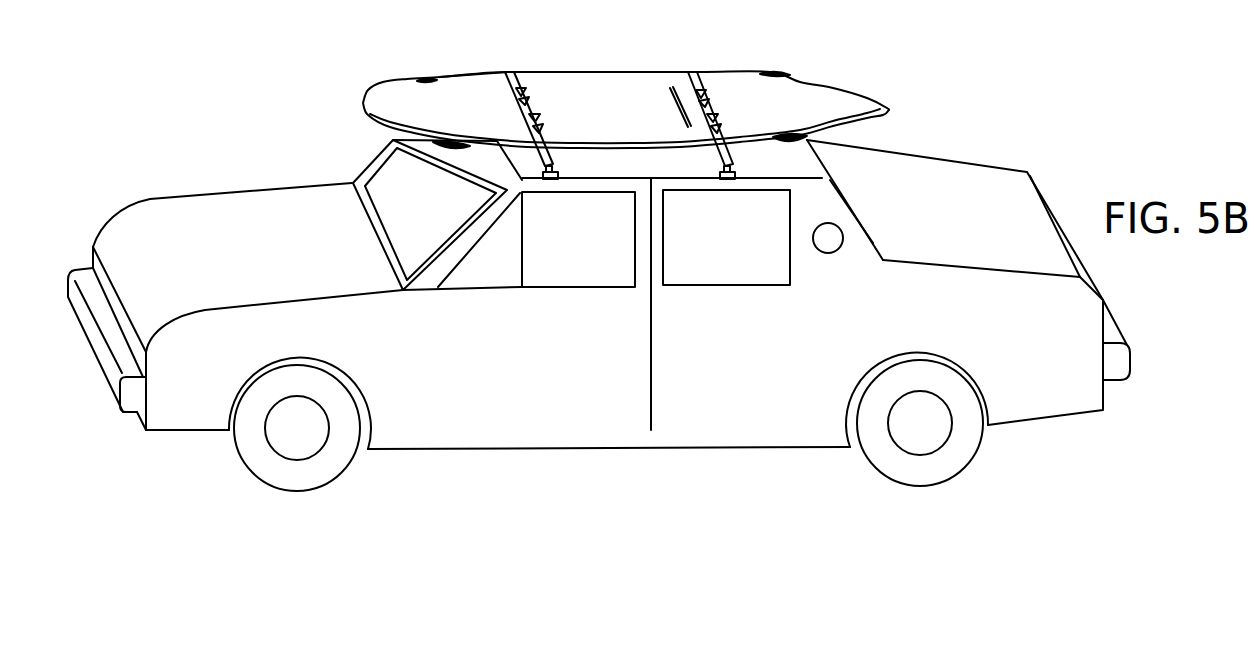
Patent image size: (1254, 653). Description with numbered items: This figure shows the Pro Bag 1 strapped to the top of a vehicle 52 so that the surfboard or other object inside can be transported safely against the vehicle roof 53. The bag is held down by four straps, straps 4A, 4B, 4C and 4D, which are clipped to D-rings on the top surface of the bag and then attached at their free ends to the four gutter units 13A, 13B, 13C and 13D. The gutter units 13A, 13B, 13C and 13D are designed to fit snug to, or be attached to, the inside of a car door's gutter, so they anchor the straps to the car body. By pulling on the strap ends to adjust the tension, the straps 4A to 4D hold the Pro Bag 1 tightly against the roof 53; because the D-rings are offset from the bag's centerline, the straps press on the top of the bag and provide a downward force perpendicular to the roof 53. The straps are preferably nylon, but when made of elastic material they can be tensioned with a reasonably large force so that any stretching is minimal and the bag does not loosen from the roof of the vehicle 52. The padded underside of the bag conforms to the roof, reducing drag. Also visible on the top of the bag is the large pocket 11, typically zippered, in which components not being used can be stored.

The Pro Bag 1 is at (383, 100).
The vehicle roof 53 is at (473, 73).
The large pocket 11 is at (668, 90).
The gutter unit 13C is at (505, 72).
The gutter unit 13D is at (689, 72).
The strap 4C is at (517, 72).
The strap 4D is at (700, 72).
The strap 4B is at (552, 140).
The strap 4A is at (733, 157).
The gutter unit 13B is at (551, 182).
The gutter unit 13A is at (727, 182).
The vehicle 52 is at (258, 190).